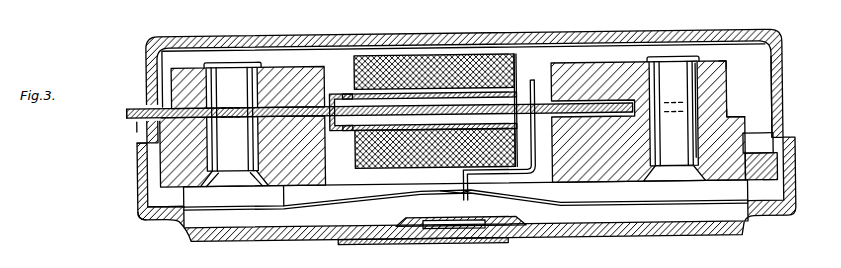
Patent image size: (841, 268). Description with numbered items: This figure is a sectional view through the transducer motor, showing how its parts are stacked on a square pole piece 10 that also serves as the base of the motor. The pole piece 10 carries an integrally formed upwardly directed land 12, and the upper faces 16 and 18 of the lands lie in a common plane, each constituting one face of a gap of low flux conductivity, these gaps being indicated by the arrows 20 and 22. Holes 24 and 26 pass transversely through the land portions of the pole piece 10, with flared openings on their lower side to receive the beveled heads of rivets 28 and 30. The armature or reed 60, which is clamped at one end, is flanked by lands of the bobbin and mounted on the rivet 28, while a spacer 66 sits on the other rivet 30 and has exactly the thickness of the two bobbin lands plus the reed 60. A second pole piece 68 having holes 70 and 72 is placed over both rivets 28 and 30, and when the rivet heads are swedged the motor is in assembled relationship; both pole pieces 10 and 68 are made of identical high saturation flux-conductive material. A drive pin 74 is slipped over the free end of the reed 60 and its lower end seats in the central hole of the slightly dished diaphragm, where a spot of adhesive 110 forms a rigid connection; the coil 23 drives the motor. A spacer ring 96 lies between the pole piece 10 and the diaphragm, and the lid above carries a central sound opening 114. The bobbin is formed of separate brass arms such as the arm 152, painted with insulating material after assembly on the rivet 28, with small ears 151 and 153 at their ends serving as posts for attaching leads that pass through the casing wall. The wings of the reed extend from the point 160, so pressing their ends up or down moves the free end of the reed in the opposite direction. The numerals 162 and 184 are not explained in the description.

The pole piece 10 is at (148, 166).
The land 12 is at (175, 141).
The upper face 16 is at (202, 122).
The upper face 18 is at (778, 104).
The gap 20 is at (300, 106).
The gap 22 is at (600, 99).
The coil 23 is at (432, 52).
The hole 24 is at (466, 193).
The hole 26 is at (698, 191).
The rivet 28 is at (228, 70).
The rivet 30 is at (672, 72).
The armature 60 is at (500, 110).
The spacer 66 is at (740, 113).
The second pole piece 68 is at (728, 65).
The hole 70 is at (273, 68).
The hole 72 is at (697, 71).
The drive pin 74 is at (530, 81).
The spacer ring 96 is at (155, 201).
The spot of adhesive 110 is at (480, 198).
The central sound opening 114 is at (770, 139).
The ear 151 is at (163, 103).
The brass arm 152 is at (143, 216).
The ear 153 is at (160, 109).
The point 160 is at (130, 103).
The wall opening 162 is at (137, 123).
The base plate portion 184 is at (268, 196).